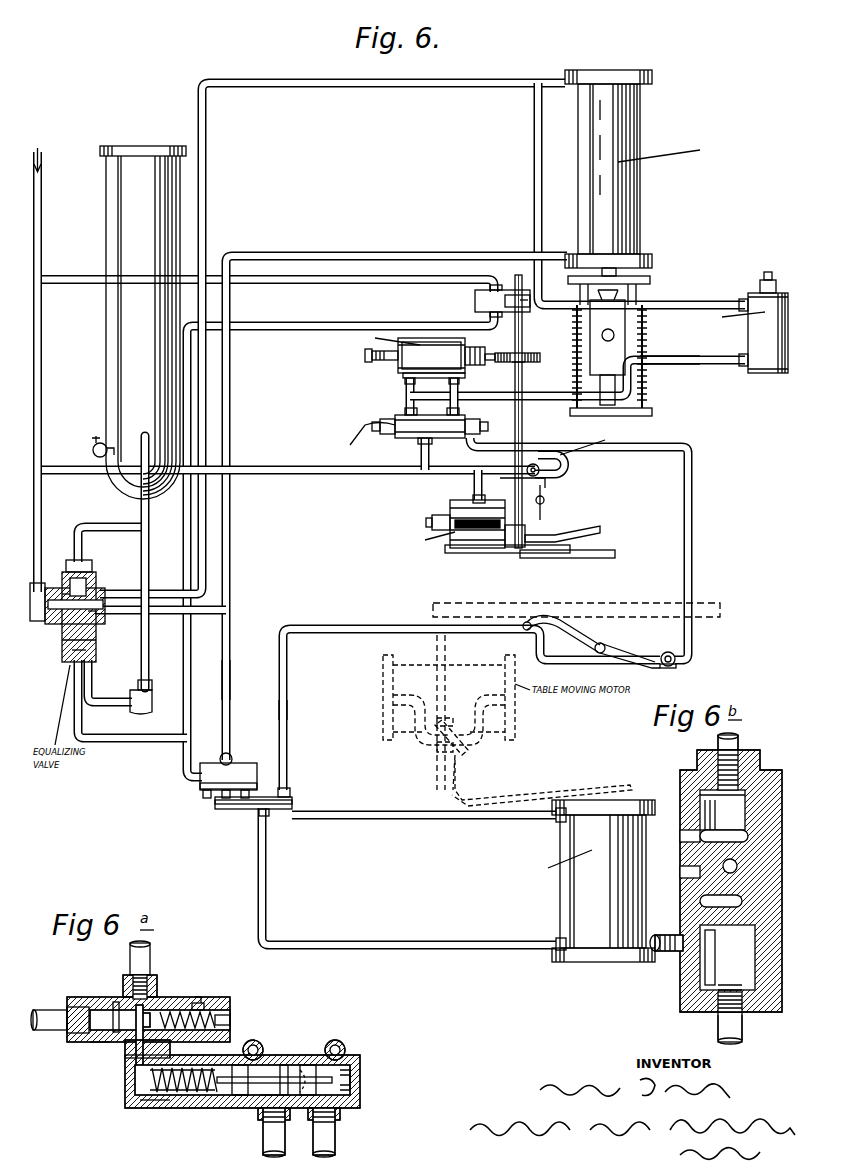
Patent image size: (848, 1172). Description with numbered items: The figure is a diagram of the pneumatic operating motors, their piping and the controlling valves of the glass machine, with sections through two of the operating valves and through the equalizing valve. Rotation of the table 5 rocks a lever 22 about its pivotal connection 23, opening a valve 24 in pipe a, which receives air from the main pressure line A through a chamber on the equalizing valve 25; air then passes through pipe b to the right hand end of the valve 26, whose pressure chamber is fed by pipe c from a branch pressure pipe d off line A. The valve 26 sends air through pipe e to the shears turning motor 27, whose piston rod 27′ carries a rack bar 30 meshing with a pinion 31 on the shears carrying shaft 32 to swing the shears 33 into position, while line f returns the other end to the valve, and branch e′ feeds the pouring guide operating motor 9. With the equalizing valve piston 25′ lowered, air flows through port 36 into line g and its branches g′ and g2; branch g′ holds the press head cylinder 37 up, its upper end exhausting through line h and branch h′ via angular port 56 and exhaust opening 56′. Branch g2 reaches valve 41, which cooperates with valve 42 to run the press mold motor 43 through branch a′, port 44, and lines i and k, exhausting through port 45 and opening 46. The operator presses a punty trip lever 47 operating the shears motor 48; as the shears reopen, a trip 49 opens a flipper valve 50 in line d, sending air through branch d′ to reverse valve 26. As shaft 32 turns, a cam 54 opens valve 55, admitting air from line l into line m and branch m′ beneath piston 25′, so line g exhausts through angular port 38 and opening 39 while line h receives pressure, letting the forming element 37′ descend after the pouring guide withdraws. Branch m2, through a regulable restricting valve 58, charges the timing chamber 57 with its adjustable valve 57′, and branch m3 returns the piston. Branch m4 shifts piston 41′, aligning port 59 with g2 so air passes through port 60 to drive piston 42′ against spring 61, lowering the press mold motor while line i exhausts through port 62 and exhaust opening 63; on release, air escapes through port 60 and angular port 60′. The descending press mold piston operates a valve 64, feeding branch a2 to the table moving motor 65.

In FIG. 6, the main pressure line A is at (42, 372).
In FIG. 6, the line l is at (90, 285).
In FIG. 6, the line m is at (380, 325).
In FIG. 6, the line h is at (415, 86).
In FIG. 6, the branch h′ is at (533, 196).
In FIG. 6, the branch g′ is at (452, 253).
In FIG. 6, the line g is at (174, 615).
In FIG. 6, the branch g2 is at (231, 672).
In FIG. 6A, the branch g2 is at (152, 954).
In FIG. 6, the branch pressure pipe d is at (306, 472).
In FIG. 6, the branch d′ is at (466, 468).
In FIG. 6, the pipe c is at (423, 460).
In FIG. 6, the pipe e is at (406, 389).
In FIG. 6, the branch e′ is at (645, 382).
In FIG. 6, the line f is at (456, 392).
In FIG. 6, the pipe b is at (692, 528).
In FIG. 6, the pipe a is at (360, 628).
In FIG. 6, the branch a′ is at (284, 708).
In FIG. 6A, the branch a′ is at (315, 1060).
In FIG. 6, the branch a2 is at (447, 648).
In FIG. 6, the line k is at (448, 818).
In FIG. 6A, the line k is at (337, 1143).
In FIG. 6, the line i is at (262, 884).
In FIG. 6A, the line i is at (262, 1147).
In FIG. 6, the branch m′ is at (82, 668).
In FIG. 6B, the branch m′ is at (742, 1026).
In FIG. 6, the branch m2 is at (146, 548).
In FIG. 6, the branch m3 is at (106, 532).
In FIG. 6B, the branch m3 is at (742, 736).
In FIG. 6A, the branch m4 is at (40, 1015).
In FIG. 6, the table 5 is at (715, 608).
In FIG. 6, the pouring guide operating motor 9 is at (717, 322).
In FIG. 6, the lever 22 is at (558, 615).
In FIG. 6, the pivotal connection 23 is at (604, 646).
In FIG. 6, the valve 24 is at (668, 652).
In FIG. 6, the equalizing valve 25 is at (92, 583).
In FIG. 6B, the equalizing valve 25 is at (782, 829).
In FIG. 6, the equalizing valve piston 25′ is at (94, 645).
In FIG. 6B, the equalizing valve piston 25′ is at (762, 899).
In FIG. 6, the valve 26 is at (427, 425).
In FIG. 6, the shears turning motor 27 is at (390, 354).
In FIG. 6, the piston rod 27′ is at (490, 352).
In FIG. 6, the rack bar 30 is at (528, 356).
In FIG. 6, the pinion 31 is at (520, 366).
In FIG. 6, the shears carrying shaft 32 is at (523, 416).
In FIG. 6, the shears 33 is at (598, 556).
In FIG. 6, the port 36 is at (92, 614).
In FIG. 6B, the port 36 is at (772, 866).
In FIG. 6, the press head cylinder 37 is at (640, 211).
In FIG. 6, the forming element 37′ is at (640, 408).
In FIG. 6, the angular port 38 is at (62, 640).
In FIG. 6B, the angular port 38 is at (705, 904).
In FIG. 6B, the opening 39 is at (682, 874).
In FIG. 6, the valve 41 is at (240, 765).
In FIG. 6A, the valve 41 is at (108, 1000).
In FIG. 6A, the piston 41′ is at (112, 1040).
In FIG. 6, the valve 42 is at (247, 806).
In FIG. 6A, the valve 42 is at (296, 1060).
In FIG. 6A, the piston 42′ is at (160, 1100).
In FIG. 6, the press mold motor 43 is at (547, 881).
In FIG. 6A, the port 44 is at (268, 1098).
In FIG. 6A, the port 45 is at (350, 1088).
In FIG. 6A, the opening 46 is at (348, 1050).
In FIG. 6, the punty trip lever 47 is at (602, 530).
In FIG. 6, the shears motor 48 is at (480, 540).
In FIG. 6, the trip 49 is at (548, 500).
In FIG. 6, the flipper valve 50 is at (545, 475).
In FIG. 6, the cam 54 is at (525, 302).
In FIG. 6, the valve 55 is at (478, 300).
In FIG. 6, the angular port 56 is at (94, 596).
In FIG. 6B, the angular port 56 is at (682, 836).
In FIG. 6B, the exhaust opening 56′ is at (724, 835).
In FIG. 6, the air equalizing or timing chamber 57 is at (143, 322).
In FIG. 6, the adjustable valve 57′ is at (95, 445).
In FIG. 6, the regulable restricting valve 58 is at (140, 708).
In FIG. 6A, the port 59 is at (117, 1005).
In FIG. 6A, the port 60 is at (135, 1060).
In FIG. 6A, the angular port 60′ is at (150, 1018).
In FIG. 6A, the spring 61 is at (195, 1100).
In FIG. 6A, the port 62 is at (240, 1100).
In FIG. 6A, the exhaust opening 63 is at (255, 1040).
In FIG. 6, the valve 64 is at (435, 745).
In FIG. 6, the table moving motor 65 is at (395, 683).